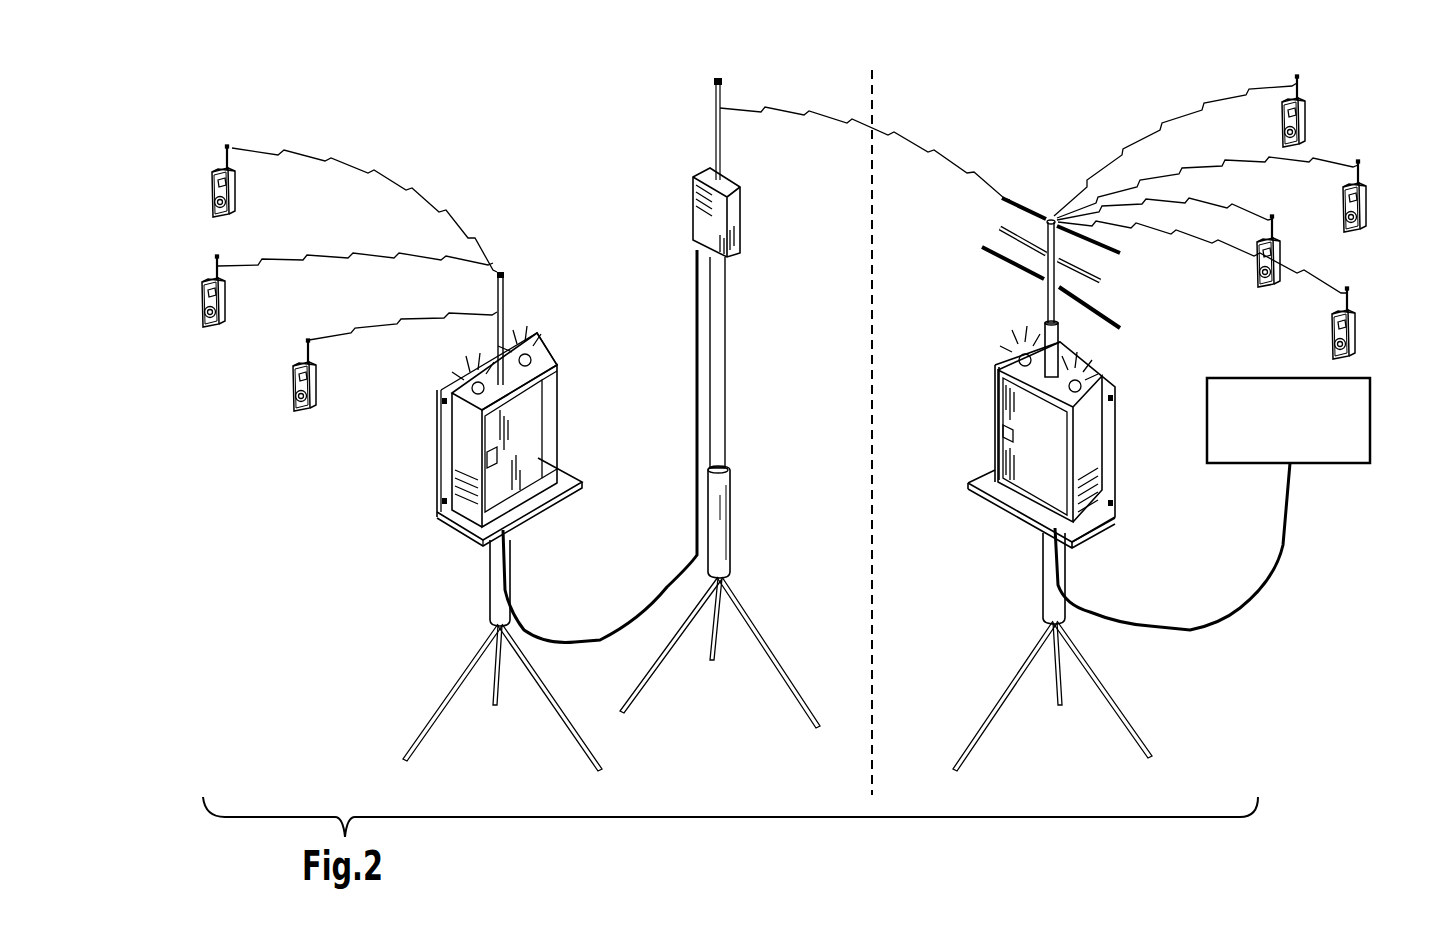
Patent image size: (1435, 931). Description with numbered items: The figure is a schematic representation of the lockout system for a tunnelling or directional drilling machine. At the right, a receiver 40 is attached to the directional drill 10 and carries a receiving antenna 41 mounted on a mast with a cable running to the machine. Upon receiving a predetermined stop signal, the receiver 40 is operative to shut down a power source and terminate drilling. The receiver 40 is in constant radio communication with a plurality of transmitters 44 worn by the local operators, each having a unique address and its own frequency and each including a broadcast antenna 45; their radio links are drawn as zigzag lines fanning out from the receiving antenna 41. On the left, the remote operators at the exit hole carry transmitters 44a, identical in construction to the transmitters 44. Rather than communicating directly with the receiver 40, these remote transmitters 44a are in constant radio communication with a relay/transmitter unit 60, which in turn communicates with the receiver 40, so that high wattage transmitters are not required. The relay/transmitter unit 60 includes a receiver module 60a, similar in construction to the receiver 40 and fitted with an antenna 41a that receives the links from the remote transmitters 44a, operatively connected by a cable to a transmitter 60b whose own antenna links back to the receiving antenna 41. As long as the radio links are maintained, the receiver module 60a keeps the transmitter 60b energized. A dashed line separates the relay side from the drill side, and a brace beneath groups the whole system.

The directional drill 10 is at (1355, 427).
The receiver 40 is at (1138, 394).
The receiving antenna 41 is at (1050, 216).
The antenna 41a is at (502, 325).
The transmitter 44 is at (1365, 202).
The remote operator carried transmitter 44a is at (235, 192).
The broadcast antenna 45 is at (1297, 93).
The relay/transmitter unit 60 is at (608, 186).
The receiver module 60a is at (557, 413).
The transmitter 60b is at (733, 225).